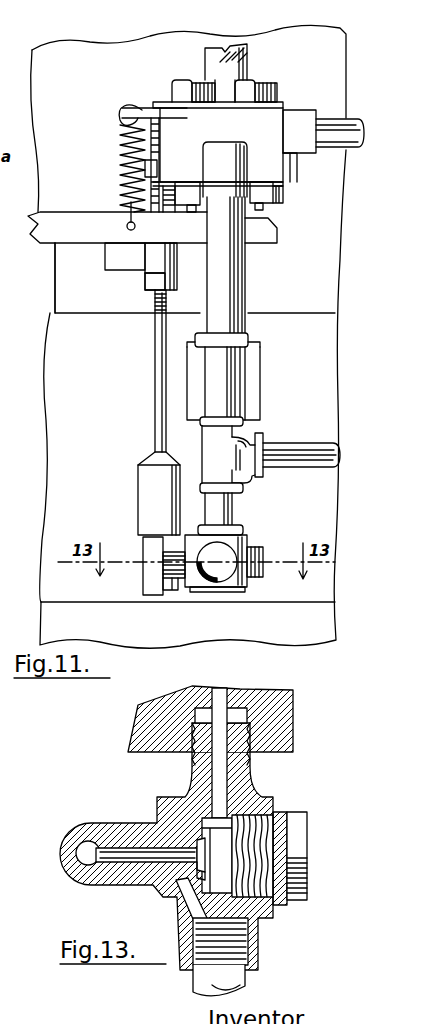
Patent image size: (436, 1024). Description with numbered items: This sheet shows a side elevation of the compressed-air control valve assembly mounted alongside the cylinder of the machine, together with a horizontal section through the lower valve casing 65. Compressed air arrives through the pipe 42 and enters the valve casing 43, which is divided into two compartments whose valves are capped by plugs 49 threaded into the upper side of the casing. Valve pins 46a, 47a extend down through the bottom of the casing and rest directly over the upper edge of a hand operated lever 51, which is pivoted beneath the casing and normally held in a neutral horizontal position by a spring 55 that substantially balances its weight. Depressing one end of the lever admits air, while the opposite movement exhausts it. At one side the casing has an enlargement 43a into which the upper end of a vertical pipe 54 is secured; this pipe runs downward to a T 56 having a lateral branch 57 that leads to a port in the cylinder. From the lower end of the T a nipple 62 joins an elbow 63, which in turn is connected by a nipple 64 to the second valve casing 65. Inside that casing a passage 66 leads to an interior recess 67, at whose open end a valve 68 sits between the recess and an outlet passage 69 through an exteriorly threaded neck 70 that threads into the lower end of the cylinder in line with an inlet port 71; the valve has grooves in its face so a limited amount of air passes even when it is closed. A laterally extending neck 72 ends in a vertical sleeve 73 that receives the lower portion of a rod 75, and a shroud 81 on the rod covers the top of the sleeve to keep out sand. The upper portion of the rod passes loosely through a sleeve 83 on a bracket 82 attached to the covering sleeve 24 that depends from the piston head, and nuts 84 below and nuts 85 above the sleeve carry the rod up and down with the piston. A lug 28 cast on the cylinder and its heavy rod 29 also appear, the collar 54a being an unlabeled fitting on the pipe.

In FIG. 11, the covering sleeve 24 is at (60, 283).
In FIG. 11, the lug 28 is at (259, 377).
In FIG. 11, the rod 29 is at (247, 63).
In FIG. 11, the pipe 42 is at (336, 138).
In FIG. 11, the valve casing 43 is at (262, 124).
In FIG. 11, the enlargement 43a is at (222, 153).
In FIG. 11, the valve pin 46a is at (263, 207).
In FIG. 11, the valve pin 47a is at (192, 212).
In FIG. 11, the plug 49 is at (183, 80).
In FIG. 11, the hand operated lever 51 is at (70, 236).
In FIG. 11, the vertical pipe 54 is at (225, 290).
In FIG. 11, the collar 54a is at (247, 341).
In FIG. 11, the spring 55 is at (122, 152).
In FIG. 11, the T 56 is at (236, 447).
In FIG. 11, the lateral branch 57 is at (301, 456).
In FIG. 11, the nipple 62 is at (233, 509).
In FIG. 11, the elbow 63 is at (231, 556).
In FIG. 13, the nipple 64 is at (228, 982).
In FIG. 11, the second valve casing 65 is at (243, 592).
In FIG. 13, the second valve casing 65 is at (243, 908).
In FIG. 13, the passage 66 is at (188, 896).
In FIG. 13, the interior recess 67 is at (183, 841).
In FIG. 13, the valve 68 is at (206, 850).
In FIG. 13, the outlet passage 69 is at (222, 796).
In FIG. 13, the exteriorly threaded neck 70 is at (250, 746).
In FIG. 13, the inlet port 71 is at (221, 698).
In FIG. 11, the laterally extending neck 72 is at (180, 591).
In FIG. 13, the laterally extending neck 72 is at (118, 884).
In FIG. 11, the sleeve 73 is at (150, 582).
In FIG. 11, the rod 75 is at (156, 386).
In FIG. 11, the shroud 81 is at (148, 492).
In FIG. 11, the bracket 82 is at (118, 259).
In FIG. 11, the sleeve 83 is at (171, 258).
In FIG. 11, the nuts 84 is at (146, 301).
In FIG. 11, the nuts 85 is at (153, 168).